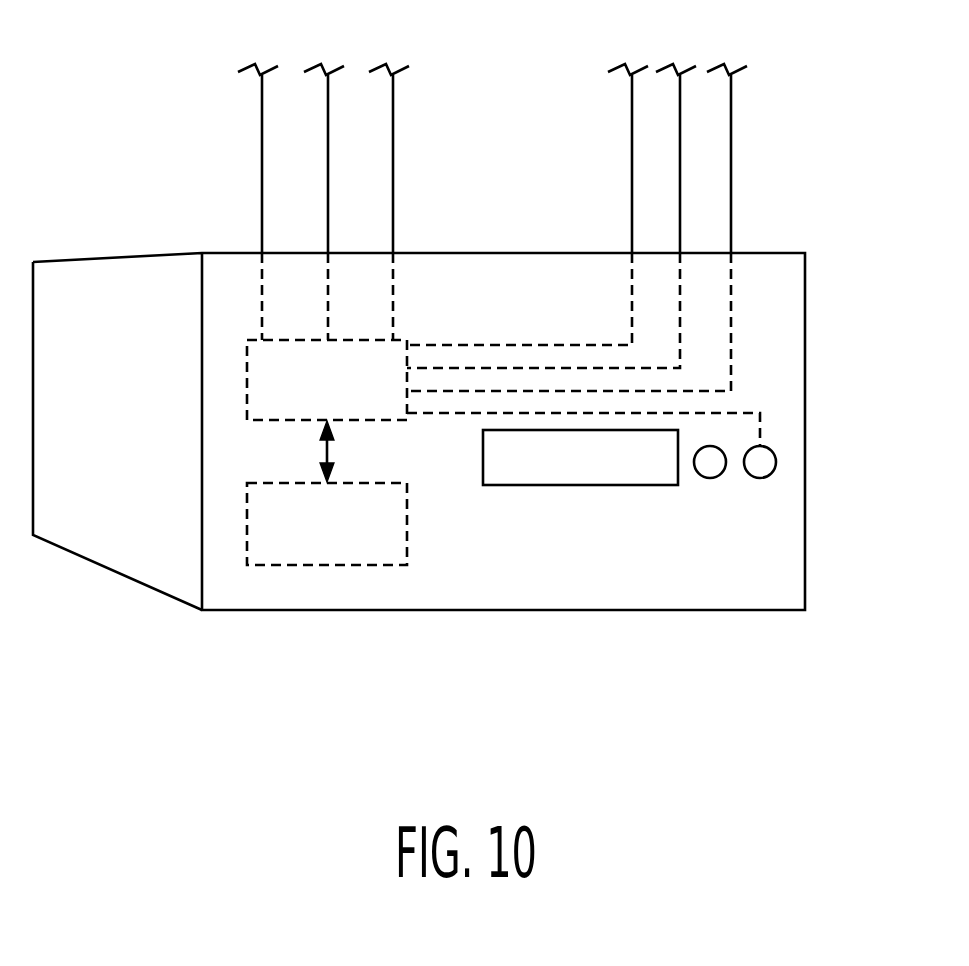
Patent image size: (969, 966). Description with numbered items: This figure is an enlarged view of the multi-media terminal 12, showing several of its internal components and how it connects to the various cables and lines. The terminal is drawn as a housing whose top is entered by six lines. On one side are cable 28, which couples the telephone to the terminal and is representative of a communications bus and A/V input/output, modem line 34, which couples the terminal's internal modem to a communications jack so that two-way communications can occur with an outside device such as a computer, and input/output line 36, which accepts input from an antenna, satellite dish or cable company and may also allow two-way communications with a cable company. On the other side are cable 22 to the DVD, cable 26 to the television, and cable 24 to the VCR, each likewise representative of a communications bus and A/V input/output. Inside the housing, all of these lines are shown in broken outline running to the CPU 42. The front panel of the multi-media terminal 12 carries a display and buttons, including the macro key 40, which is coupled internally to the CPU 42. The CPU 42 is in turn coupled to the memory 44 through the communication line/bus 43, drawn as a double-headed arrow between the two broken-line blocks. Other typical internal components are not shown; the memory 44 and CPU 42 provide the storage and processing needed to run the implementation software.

The multi-media terminal 12 is at (785, 583).
The cable 22 is at (632, 135).
The cable 24 is at (731, 128).
The cable 26 is at (680, 108).
The cable 28 is at (260, 113).
The modem line 34 is at (327, 118).
The input/output line 36 is at (393, 145).
The macro key 40 is at (765, 463).
The CPU 42 is at (247, 405).
The communication line/bus 43 is at (330, 445).
The memory 44 is at (318, 565).